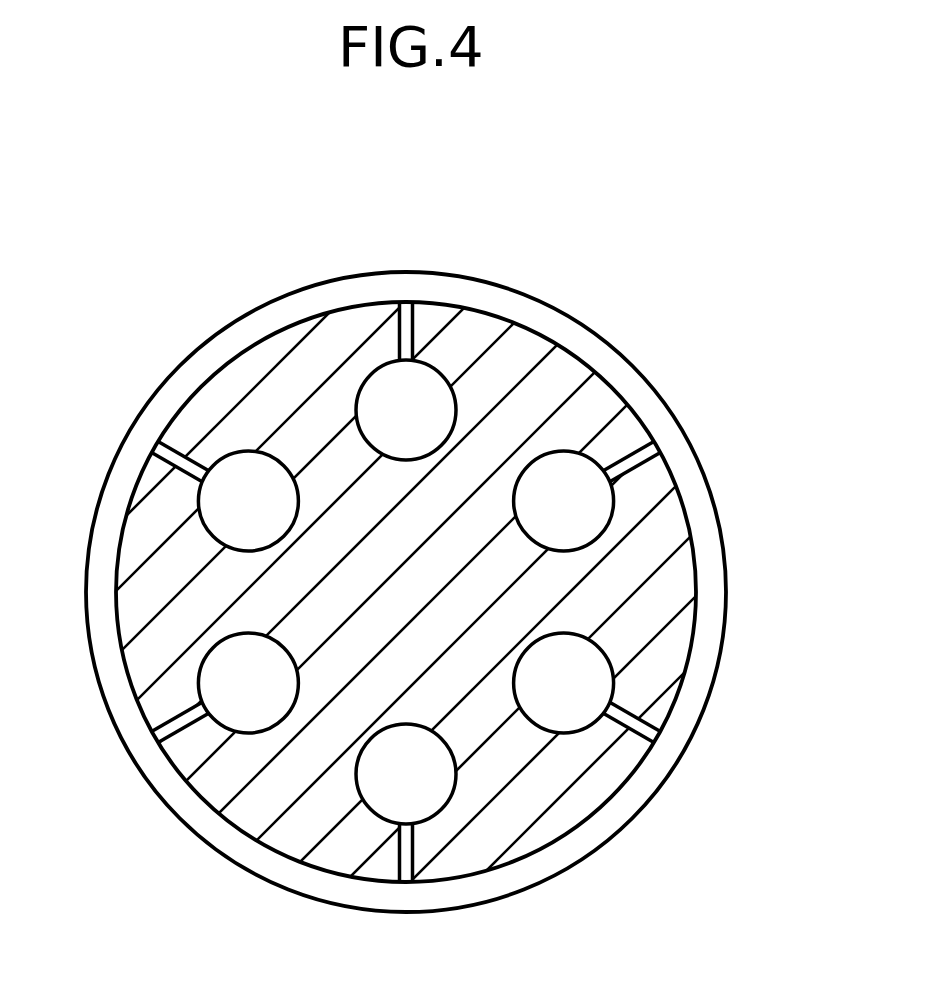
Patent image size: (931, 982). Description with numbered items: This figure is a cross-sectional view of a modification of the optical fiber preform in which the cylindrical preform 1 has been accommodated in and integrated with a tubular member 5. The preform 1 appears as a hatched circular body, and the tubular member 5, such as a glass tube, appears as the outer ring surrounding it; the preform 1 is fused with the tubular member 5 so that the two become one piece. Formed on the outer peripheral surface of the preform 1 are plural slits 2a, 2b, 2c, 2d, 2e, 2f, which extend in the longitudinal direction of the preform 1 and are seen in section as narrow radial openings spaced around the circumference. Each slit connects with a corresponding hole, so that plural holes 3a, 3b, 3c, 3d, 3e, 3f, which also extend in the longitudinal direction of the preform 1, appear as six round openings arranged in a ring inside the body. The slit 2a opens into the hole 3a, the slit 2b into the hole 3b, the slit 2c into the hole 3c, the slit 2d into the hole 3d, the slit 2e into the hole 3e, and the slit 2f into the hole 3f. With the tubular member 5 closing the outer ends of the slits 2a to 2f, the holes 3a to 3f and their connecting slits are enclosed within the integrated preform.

The preform 1 is at (563, 388).
The tubular member 5 is at (485, 297).
The slit 2a is at (396, 322).
The slit 2b is at (632, 452).
The slit 2c is at (635, 733).
The slit 2d is at (412, 853).
The slit 2e is at (175, 740).
The slit 2f is at (175, 445).
The hole 3a is at (363, 400).
The hole 3b is at (600, 510).
The hole 3c is at (595, 667).
The hole 3d is at (375, 793).
The hole 3e is at (210, 680).
The hole 3f is at (213, 507).